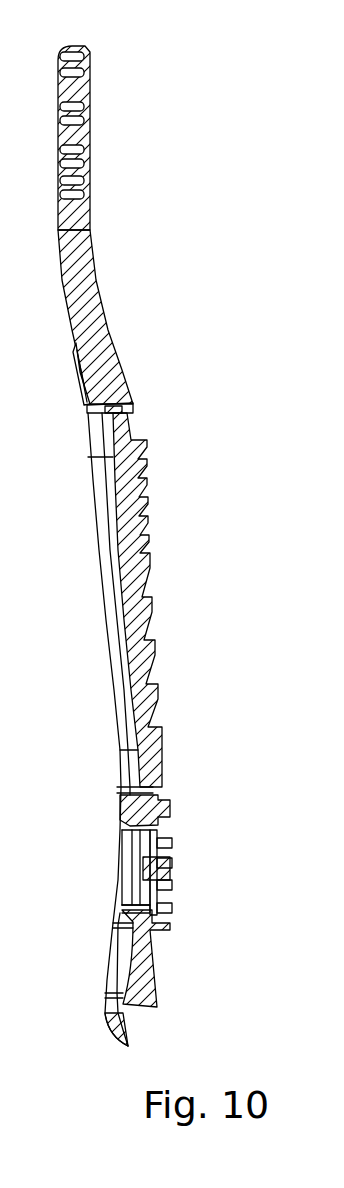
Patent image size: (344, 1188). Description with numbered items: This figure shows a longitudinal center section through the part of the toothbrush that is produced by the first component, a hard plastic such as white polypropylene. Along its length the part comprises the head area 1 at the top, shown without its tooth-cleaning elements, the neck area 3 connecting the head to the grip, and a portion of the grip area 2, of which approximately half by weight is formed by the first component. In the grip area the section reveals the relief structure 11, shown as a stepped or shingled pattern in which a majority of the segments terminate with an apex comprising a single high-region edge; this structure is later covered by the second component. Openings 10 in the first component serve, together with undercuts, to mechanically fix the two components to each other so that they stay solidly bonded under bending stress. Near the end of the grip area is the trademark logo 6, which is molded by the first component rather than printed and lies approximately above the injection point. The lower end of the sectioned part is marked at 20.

The head area 1 is at (100, 131).
The grip area 2 is at (193, 765).
The neck area 3 is at (97, 290).
The trademark logo 6 is at (168, 874).
The openings 10 is at (128, 405).
The relief structure 11 is at (158, 618).
The lower tip 20 is at (123, 1012).